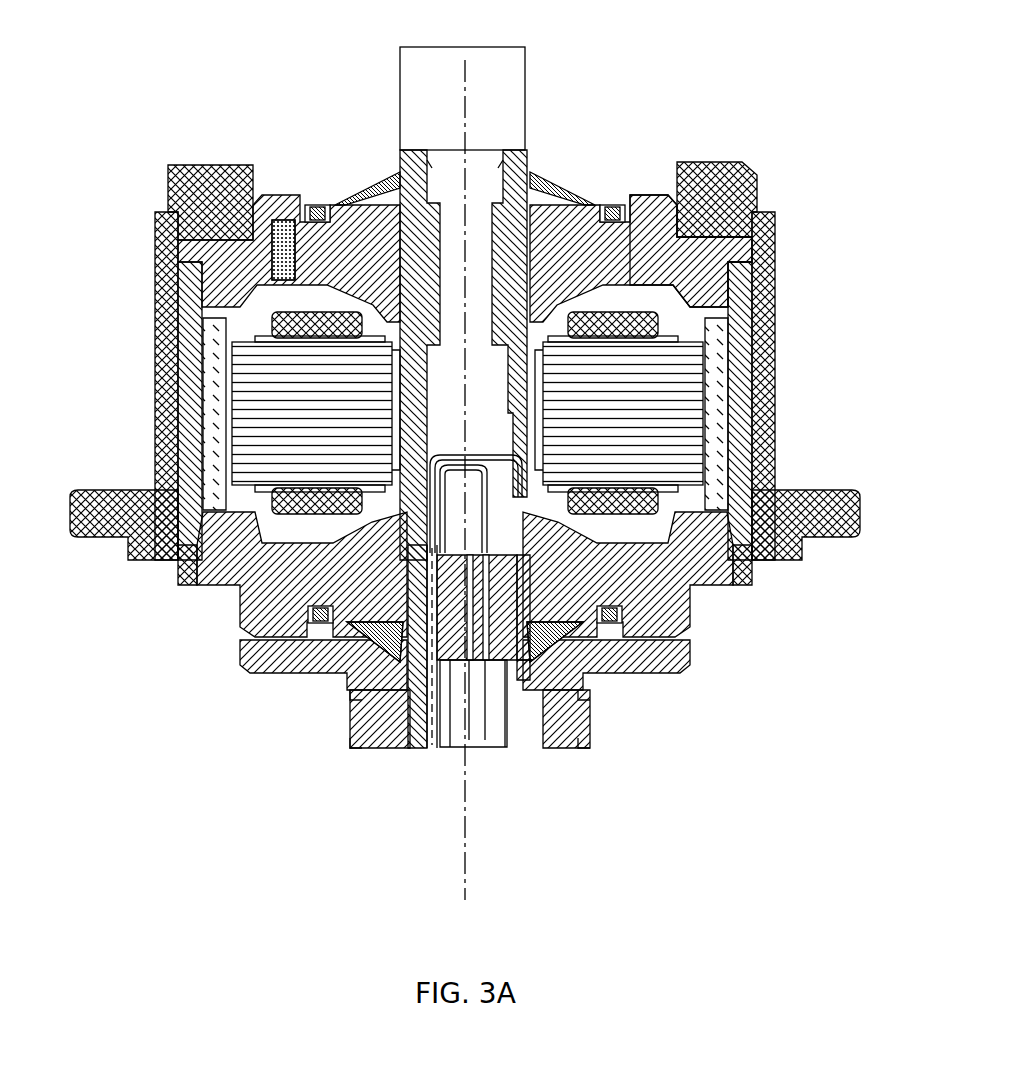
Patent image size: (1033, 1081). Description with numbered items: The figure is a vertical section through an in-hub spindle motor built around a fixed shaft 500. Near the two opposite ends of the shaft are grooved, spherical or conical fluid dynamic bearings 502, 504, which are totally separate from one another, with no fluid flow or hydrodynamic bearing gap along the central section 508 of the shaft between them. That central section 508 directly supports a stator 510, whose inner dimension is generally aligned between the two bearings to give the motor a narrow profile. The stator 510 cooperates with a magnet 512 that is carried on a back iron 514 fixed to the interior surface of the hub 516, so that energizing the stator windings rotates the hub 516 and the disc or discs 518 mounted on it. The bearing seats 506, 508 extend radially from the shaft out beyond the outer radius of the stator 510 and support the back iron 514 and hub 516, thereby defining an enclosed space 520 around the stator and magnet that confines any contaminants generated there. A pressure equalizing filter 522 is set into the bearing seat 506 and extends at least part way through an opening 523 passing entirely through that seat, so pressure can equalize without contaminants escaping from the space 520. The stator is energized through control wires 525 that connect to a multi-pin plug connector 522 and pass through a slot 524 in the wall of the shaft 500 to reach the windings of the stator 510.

The fixed shaft 500 is at (527, 163).
The fluid dynamic bearing 502 is at (320, 660).
The fluid dynamic bearing 504 is at (376, 190).
The bearing seat 506 is at (635, 240).
The central section of the shaft 508 is at (775, 330).
The stator 510 is at (628, 417).
The magnet 512 is at (775, 380).
The back iron 514 is at (775, 287).
The hub 516 is at (772, 225).
The disc 518 is at (103, 553).
The enclosed space 520 is at (775, 228).
The pressure equalizing filter 522 is at (313, 205).
The opening 523 is at (288, 225).
The slot 524 is at (517, 433).
The control wires 525 is at (535, 645).